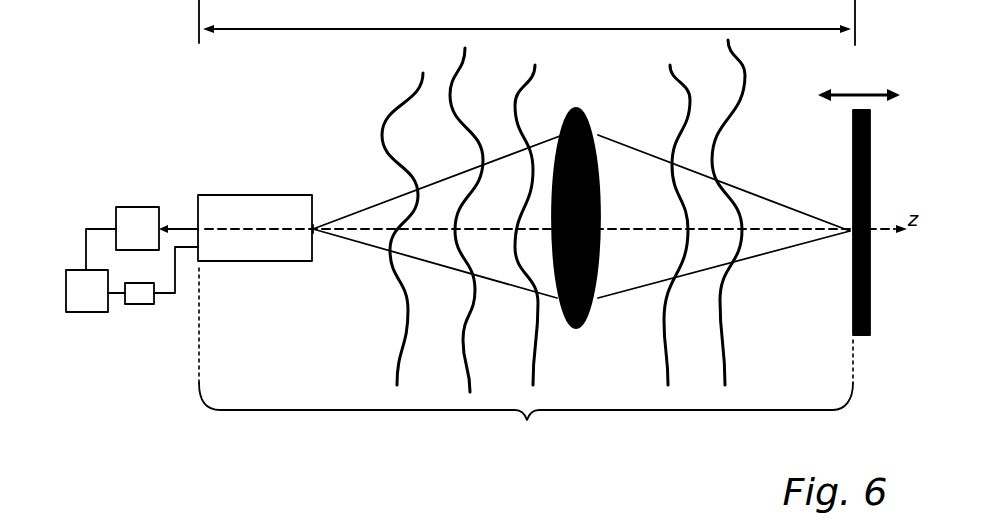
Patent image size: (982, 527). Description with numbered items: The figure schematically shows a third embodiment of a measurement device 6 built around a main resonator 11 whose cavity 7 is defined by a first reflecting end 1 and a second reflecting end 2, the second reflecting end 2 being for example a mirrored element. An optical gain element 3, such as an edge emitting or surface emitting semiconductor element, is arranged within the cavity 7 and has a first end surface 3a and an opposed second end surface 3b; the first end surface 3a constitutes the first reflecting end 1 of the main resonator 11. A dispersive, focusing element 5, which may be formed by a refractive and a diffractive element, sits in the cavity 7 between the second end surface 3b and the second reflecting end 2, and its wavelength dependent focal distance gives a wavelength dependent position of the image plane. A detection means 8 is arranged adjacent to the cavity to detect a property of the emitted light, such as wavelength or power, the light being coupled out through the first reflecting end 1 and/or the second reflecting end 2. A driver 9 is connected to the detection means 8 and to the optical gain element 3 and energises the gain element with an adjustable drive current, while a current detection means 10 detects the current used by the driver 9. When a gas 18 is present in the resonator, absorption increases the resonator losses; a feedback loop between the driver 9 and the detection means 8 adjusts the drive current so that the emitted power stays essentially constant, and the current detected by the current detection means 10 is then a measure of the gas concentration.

The first reflecting end 1 is at (198, 195).
The second reflecting end 2 is at (853, 175).
The optical gain element 3 is at (266, 178).
The first end surface 3a is at (195, 255).
The second end surface 3b is at (313, 249).
The dispersive, focusing element 5 is at (590, 123).
The measurement device 6 is at (351, 127).
The cavity 7 is at (527, 22).
The detection means 8 is at (139, 207).
The driver 9 is at (88, 312).
The current detection means 10 is at (140, 305).
The main resonator 11 is at (526, 418).
The gas 18 is at (450, 63).